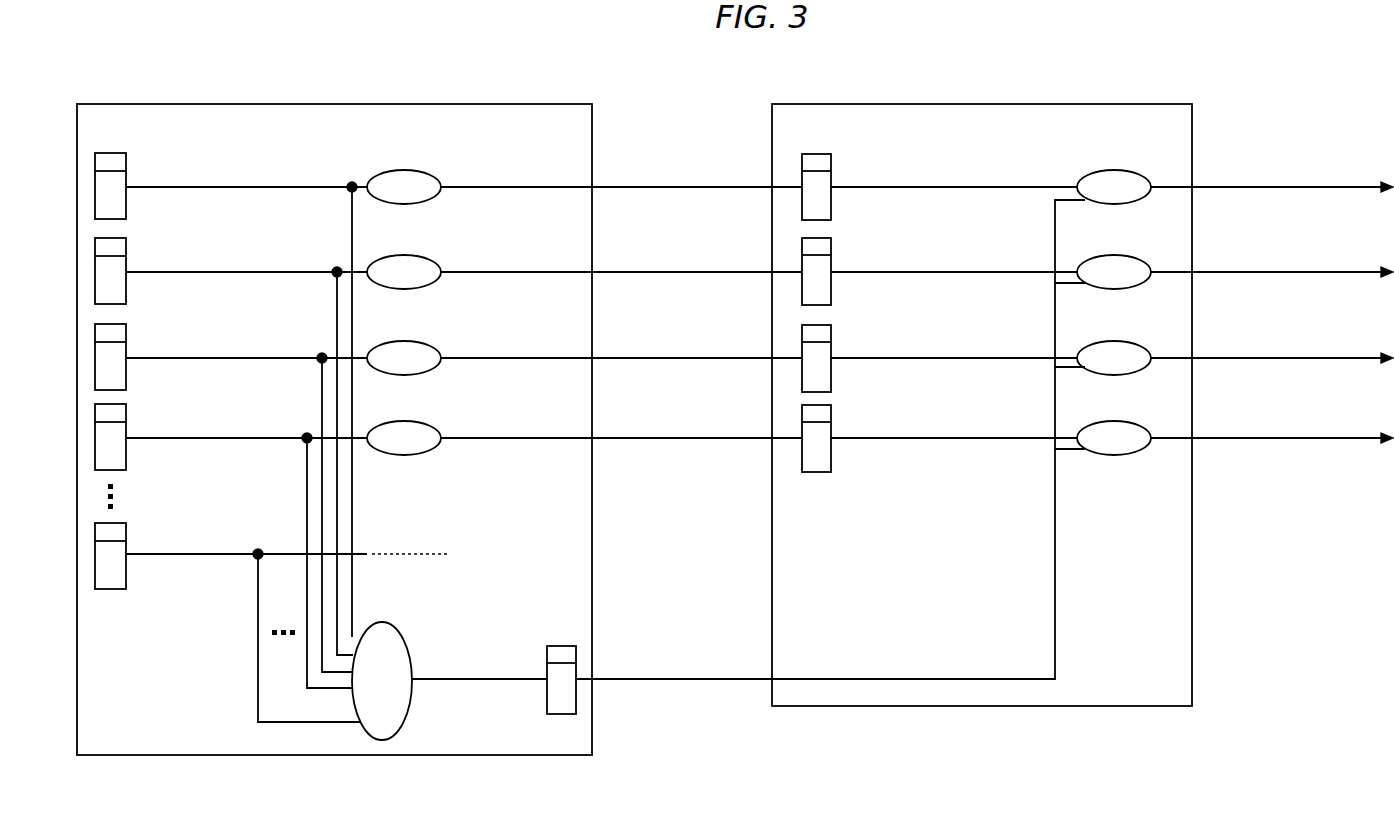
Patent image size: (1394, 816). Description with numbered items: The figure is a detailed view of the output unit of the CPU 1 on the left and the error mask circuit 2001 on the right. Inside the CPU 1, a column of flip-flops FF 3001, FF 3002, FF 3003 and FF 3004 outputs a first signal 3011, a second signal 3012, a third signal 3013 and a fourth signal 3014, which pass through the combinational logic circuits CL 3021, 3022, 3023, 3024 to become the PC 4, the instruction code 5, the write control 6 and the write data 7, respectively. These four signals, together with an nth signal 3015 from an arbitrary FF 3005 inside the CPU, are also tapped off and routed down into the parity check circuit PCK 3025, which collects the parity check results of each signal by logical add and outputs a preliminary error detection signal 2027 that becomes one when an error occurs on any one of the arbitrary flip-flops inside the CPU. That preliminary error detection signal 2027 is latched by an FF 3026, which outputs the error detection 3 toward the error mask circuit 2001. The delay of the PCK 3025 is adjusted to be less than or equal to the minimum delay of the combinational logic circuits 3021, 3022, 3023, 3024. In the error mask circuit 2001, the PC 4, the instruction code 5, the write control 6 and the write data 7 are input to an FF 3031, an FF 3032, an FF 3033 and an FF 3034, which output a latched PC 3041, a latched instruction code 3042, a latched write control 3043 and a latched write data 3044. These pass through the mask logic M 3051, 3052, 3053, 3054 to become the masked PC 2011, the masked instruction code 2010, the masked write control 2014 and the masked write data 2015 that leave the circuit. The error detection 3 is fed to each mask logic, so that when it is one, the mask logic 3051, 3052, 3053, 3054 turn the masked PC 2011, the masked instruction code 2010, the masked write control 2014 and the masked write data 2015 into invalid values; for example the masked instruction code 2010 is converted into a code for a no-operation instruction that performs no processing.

The CPU 1 is at (308, 104).
The error mask circuit 2001 is at (984, 104).
The error detection 3 is at (737, 678).
The PC 4 is at (745, 185).
The instruction code 5 is at (755, 270).
The write control 6 is at (745, 356).
The write data 7 is at (745, 436).
The FF 3001 is at (128, 162).
The FF 3002 is at (128, 247).
The FF 3003 is at (128, 333).
The FF 3004 is at (128, 413).
The arbitrary FF 3005 is at (128, 532).
The signal 1 3011 is at (258, 186).
The signal 2 3012 is at (258, 271).
The signal 3 3013 is at (258, 357).
The signal 4 3014 is at (258, 437).
The signal n 3015 is at (225, 553).
The combinational logic circuit CL1 3021 is at (428, 172).
The combinational logic circuit CL2 3022 is at (428, 257).
The combinational logic circuit CL3 3023 is at (428, 343).
The combinational logic circuit CL4 3024 is at (428, 423).
The parity check circuit PCK 3025 is at (380, 623).
The FF 3026 is at (558, 645).
The error detection 0 2027 is at (462, 682).
The FF 3031 is at (833, 165).
The FF 3032 is at (833, 249).
The FF 3033 is at (833, 335).
The FF 3034 is at (833, 415).
The PC0 3041 is at (1008, 185).
The instruction code 0 3042 is at (1026, 270).
The write control 0 3043 is at (1008, 356).
The write data 0 3044 is at (1008, 436).
The mask logic M1 3051 is at (1136, 171).
The mask logic M2 3052 is at (1136, 256).
The mask logic M3 3053 is at (1136, 342).
The mask logic M4 3054 is at (1136, 422).
The PC 1 2011 is at (1356, 185).
The instruction code 1 2010 is at (1358, 270).
The write control 1 2014 is at (1356, 356).
The write data 1 2015 is at (1356, 436).